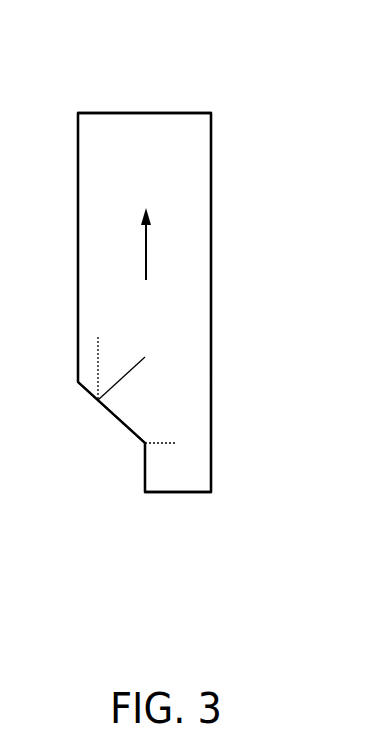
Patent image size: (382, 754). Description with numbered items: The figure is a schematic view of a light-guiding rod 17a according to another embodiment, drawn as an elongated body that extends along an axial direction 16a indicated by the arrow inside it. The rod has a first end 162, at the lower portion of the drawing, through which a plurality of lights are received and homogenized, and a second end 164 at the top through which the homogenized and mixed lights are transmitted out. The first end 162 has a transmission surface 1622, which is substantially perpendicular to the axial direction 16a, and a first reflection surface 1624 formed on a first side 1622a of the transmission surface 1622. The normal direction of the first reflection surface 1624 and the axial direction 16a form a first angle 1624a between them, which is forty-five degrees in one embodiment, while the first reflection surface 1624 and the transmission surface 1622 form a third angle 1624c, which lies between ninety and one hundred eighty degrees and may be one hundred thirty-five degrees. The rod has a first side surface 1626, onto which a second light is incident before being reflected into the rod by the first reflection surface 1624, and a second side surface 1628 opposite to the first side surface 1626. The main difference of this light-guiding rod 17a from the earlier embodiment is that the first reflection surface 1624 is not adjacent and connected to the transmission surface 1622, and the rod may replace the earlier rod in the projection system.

The light-guiding rod 17a is at (273, 63).
The first end 162 is at (155, 387).
The second end 164 is at (146, 132).
The axial direction 16a is at (146, 252).
The second side surface 1628 is at (78, 332).
The first side surface 1626 is at (211, 433).
The first reflection surface 1624 is at (110, 417).
The first angle 1624a is at (133, 368).
The third angle 1624c is at (167, 443).
The first side 1622a is at (143, 495).
The transmission surface 1622 is at (188, 495).